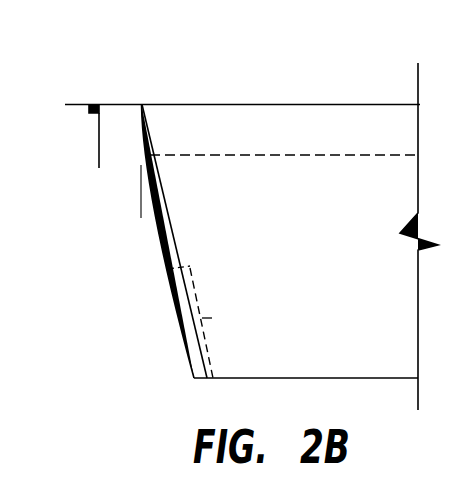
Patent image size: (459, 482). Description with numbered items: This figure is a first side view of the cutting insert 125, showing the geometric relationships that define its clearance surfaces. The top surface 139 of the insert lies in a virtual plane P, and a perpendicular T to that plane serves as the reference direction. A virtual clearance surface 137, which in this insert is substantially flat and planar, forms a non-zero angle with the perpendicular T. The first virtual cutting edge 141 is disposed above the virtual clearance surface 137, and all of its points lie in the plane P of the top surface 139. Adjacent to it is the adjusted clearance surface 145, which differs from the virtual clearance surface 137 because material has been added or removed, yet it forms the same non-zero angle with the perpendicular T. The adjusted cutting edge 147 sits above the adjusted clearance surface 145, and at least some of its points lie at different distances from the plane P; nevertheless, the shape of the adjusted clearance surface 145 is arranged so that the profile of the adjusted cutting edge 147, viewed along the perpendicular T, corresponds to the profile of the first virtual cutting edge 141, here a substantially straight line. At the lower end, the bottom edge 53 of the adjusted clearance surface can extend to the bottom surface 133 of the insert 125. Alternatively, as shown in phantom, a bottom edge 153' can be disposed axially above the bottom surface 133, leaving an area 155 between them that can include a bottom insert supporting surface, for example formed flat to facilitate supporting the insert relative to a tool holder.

The bottom edge 53 is at (194, 377).
The cutting insert 125 is at (143, 287).
The bottom surface 133 is at (320, 378).
The virtual clearance surface 137 is at (190, 309).
The top surface 139 is at (281, 153).
The first virtual cutting edge 141 is at (143, 103).
The adjusted clearance surface 145 is at (158, 237).
The adjusted cutting edge 147 is at (138, 153).
The bottom edge 153' is at (223, 299).
The area 155 is at (212, 318).
The virtual plane P is at (93, 103).
The perpendicular T is at (97, 134).